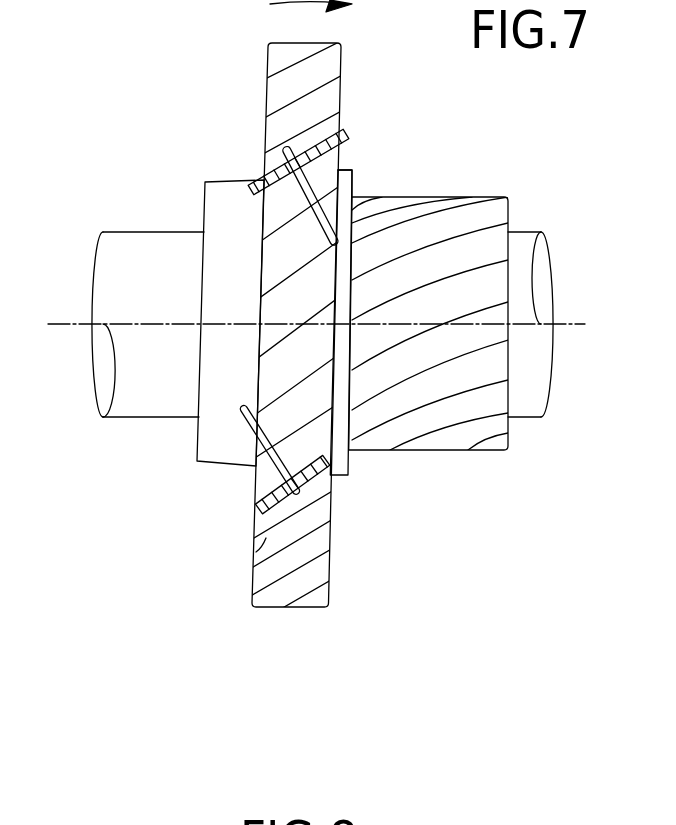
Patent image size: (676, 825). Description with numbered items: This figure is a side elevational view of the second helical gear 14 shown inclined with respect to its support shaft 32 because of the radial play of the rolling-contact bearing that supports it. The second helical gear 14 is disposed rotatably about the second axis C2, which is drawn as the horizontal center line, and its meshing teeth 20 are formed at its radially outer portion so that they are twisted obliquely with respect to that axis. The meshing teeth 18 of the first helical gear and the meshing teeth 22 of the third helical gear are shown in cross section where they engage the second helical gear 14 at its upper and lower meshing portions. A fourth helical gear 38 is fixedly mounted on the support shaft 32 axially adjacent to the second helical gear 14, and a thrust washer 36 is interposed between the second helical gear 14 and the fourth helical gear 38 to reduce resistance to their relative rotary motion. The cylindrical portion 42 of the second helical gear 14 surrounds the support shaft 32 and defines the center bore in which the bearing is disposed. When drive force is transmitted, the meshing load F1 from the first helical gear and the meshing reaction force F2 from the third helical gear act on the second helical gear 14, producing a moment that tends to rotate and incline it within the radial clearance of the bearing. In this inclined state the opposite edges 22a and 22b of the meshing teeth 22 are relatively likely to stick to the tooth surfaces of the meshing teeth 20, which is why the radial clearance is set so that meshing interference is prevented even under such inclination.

The second helical gear 14 is at (238, 56).
The meshing teeth of the first helical gear 18 is at (284, 149).
The meshing teeth of the second helical gear 20 is at (290, 590).
The meshing teeth of the third helical gear 22 is at (311, 508).
The edge of the meshing teeth of the third helical gear 22a is at (344, 450).
The edge of the meshing teeth of the third helical gear 22b is at (266, 538).
The support shaft 32 is at (146, 400).
The thrust washer 36 is at (343, 212).
The fourth helical gear 38 is at (458, 428).
The cylindrical portion 42 is at (228, 452).
The second axis C2 is at (300, 325).
The meshing load F1 is at (310, 195).
The meshing reaction force F2 is at (257, 449).